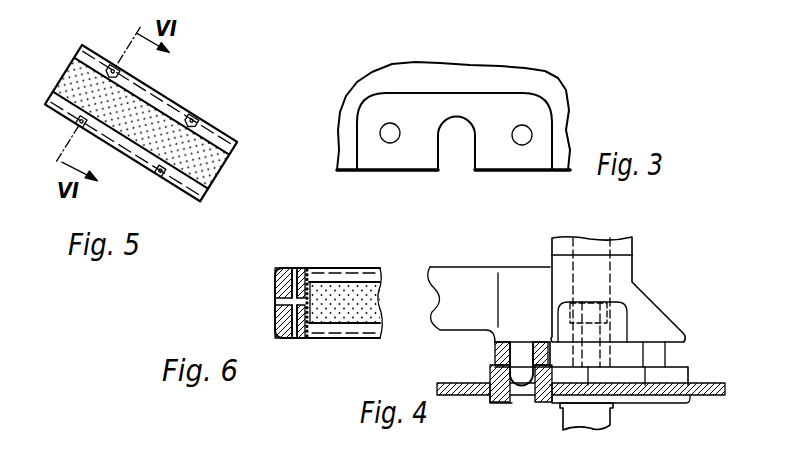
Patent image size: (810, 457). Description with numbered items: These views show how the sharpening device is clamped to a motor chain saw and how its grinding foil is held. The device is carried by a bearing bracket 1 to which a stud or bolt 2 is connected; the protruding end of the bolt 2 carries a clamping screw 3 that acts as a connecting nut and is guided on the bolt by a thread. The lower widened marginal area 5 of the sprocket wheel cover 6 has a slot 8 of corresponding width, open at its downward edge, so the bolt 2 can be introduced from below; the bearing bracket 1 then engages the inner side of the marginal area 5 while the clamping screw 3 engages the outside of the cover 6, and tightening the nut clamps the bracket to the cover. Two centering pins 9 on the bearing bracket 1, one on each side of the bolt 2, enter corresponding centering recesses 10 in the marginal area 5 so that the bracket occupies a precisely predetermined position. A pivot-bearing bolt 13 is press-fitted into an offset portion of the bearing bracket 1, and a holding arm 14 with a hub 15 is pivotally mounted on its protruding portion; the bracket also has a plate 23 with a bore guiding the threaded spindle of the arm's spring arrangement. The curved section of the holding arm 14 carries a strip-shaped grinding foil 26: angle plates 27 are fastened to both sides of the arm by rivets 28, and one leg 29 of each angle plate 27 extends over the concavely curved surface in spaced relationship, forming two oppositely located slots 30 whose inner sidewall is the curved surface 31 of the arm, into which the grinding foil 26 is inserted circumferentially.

In FIG. 4, the bearing bracket 1 is at (655, 320).
In FIG. 4, the stud or bolt 2 is at (590, 313).
In FIG. 4, the clamping screw 3 is at (573, 418).
In FIG. 3, the widened marginal area 5 is at (530, 163).
In FIG. 4, the widened marginal area 5 is at (645, 398).
In FIG. 3, the sprocket wheel cover 6 is at (561, 84).
In FIG. 4, the sprocket wheel cover 6 is at (722, 392).
In FIG. 3, the slot 8 is at (442, 148).
In FIG. 4, the centering pins 9 is at (523, 350).
In FIG. 3, the centering recesses 10 is at (386, 133).
In FIG. 4, the centering recesses 10 is at (518, 399).
In FIG. 4, the pivot-bearing bolt 13 is at (605, 272).
In FIG. 6, the holding arm 14 is at (285, 325).
In FIG. 4, the hub 15 is at (625, 242).
In FIG. 4, the plate 23 is at (459, 318).
In FIG. 5, the grinding foil 26 is at (215, 165).
In FIG. 6, the grinding foil 26 is at (363, 307).
In FIG. 5, the angle plates 27 is at (173, 100).
In FIG. 6, the angle plates 27 is at (295, 272).
In FIG. 6, the rivets 28 is at (290, 281).
In FIG. 5, the leg 29 is at (225, 137).
In FIG. 6, the leg 29 is at (376, 270).
In FIG. 6, the slots 30 is at (318, 270).
In FIG. 6, the curved surface 31 is at (288, 302).